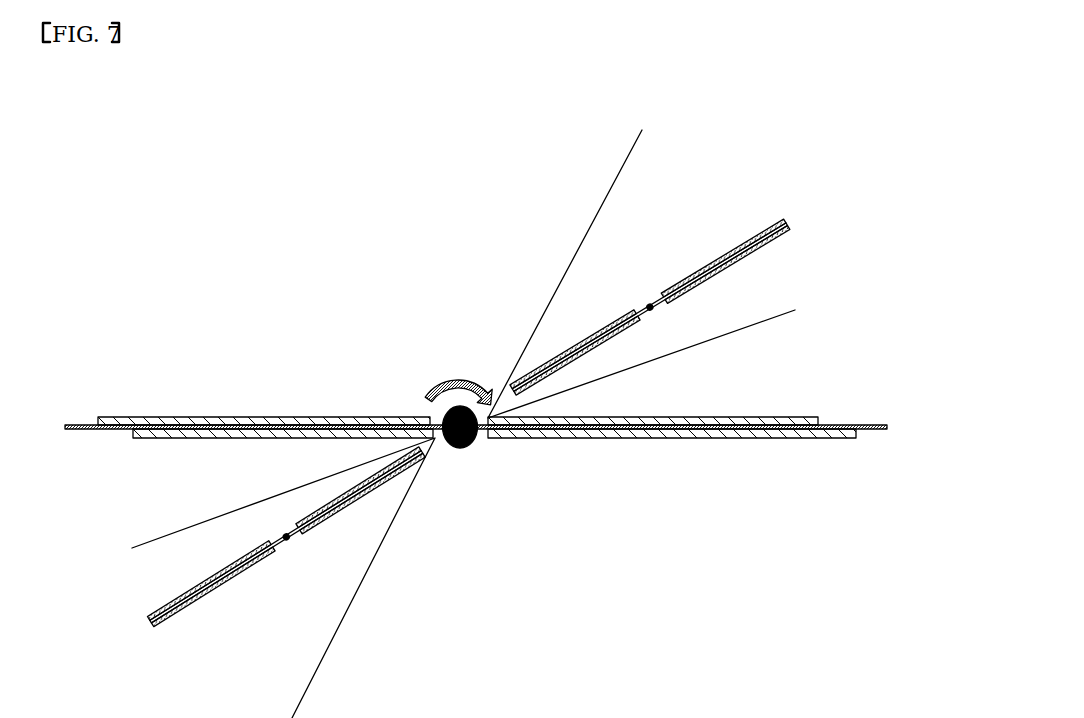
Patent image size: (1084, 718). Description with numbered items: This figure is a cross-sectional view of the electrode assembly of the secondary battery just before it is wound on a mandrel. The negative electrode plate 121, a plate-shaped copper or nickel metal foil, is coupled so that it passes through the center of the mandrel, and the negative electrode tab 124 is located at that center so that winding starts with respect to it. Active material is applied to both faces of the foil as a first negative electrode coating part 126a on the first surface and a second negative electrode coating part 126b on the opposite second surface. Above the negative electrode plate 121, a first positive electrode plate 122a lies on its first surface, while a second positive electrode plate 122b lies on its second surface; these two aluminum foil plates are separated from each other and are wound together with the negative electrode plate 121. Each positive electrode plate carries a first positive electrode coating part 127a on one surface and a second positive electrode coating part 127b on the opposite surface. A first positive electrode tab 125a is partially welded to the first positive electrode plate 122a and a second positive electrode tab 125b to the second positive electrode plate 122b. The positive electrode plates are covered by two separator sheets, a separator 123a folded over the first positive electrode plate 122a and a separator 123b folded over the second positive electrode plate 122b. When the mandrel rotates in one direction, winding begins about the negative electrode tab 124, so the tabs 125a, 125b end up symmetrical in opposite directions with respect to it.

The negative electrode plate 121 is at (888, 427).
The first positive electrode plate 122a is at (691, 290).
The second positive electrode plate 122b is at (239, 559).
The separator 123a is at (763, 322).
The separator 123b is at (323, 660).
The negative electrode tab 124 is at (443, 423).
The first positive electrode tab 125a is at (650, 304).
The second positive electrode tab 125b is at (282, 534).
The first negative electrode coating part 126a is at (811, 417).
The second negative electrode coating part 126b is at (820, 438).
The first positive electrode coating part 127a is at (592, 328).
The second positive electrode coating part 127b is at (631, 338).